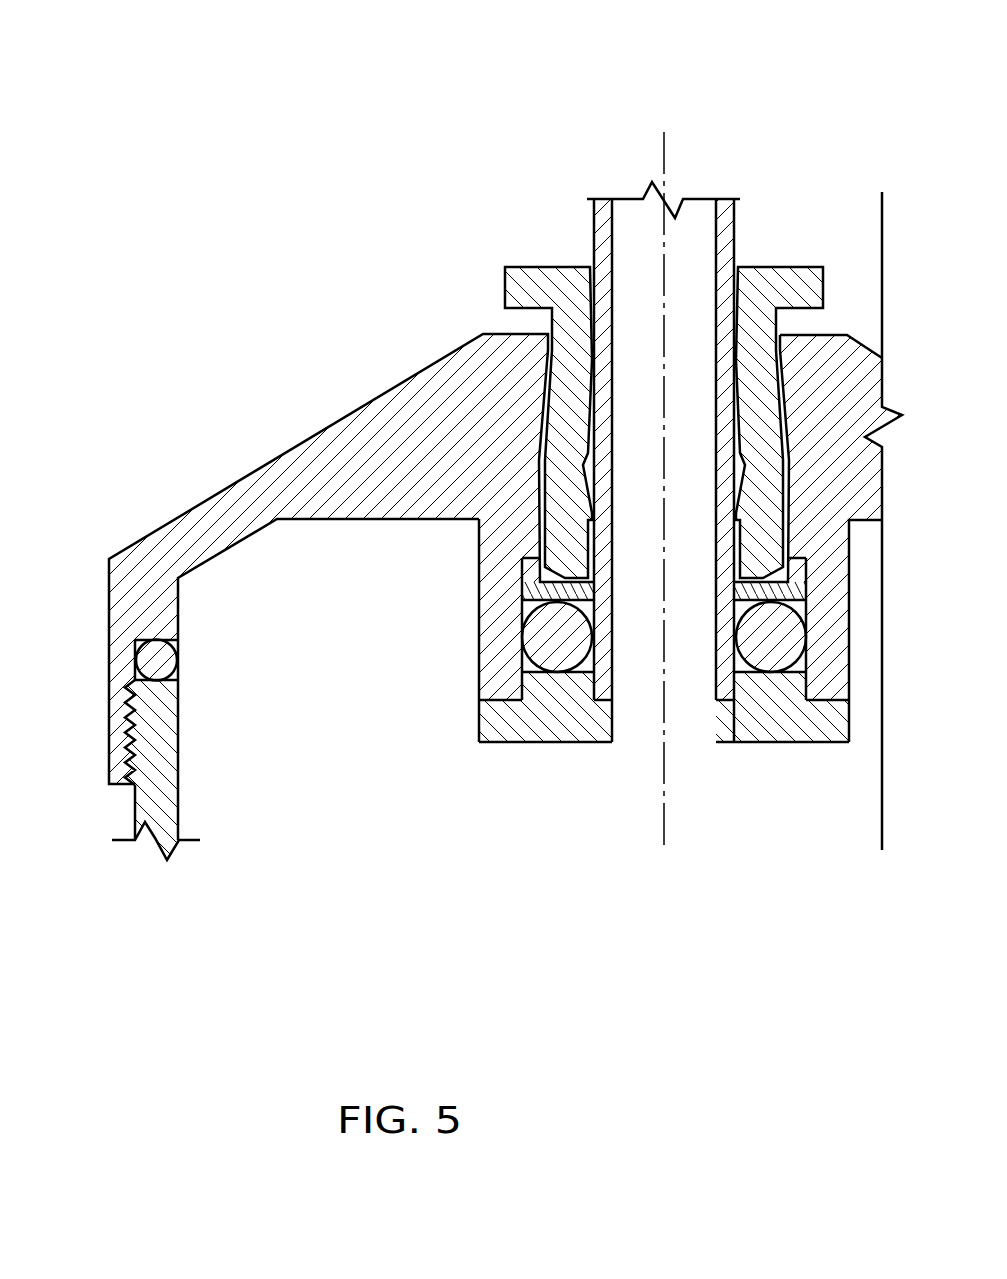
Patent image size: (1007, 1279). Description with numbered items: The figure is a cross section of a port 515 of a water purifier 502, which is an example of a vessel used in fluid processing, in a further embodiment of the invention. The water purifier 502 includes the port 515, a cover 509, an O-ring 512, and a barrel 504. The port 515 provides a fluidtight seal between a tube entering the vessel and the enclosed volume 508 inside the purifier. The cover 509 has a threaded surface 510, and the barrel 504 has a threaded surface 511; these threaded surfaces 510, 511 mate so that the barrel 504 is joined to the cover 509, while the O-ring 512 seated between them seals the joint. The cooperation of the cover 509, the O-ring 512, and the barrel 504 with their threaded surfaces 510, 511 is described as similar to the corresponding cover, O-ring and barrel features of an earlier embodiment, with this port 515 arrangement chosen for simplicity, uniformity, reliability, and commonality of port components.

The water purifier 502 is at (356, 44).
The barrel 504 is at (178, 790).
The enclosed volume 508 is at (513, 830).
The cover 509 is at (297, 445).
The threaded surface 510 is at (130, 732).
The threaded surface 511 is at (136, 700).
The O-ring 512 is at (178, 663).
The port 515 is at (778, 113).